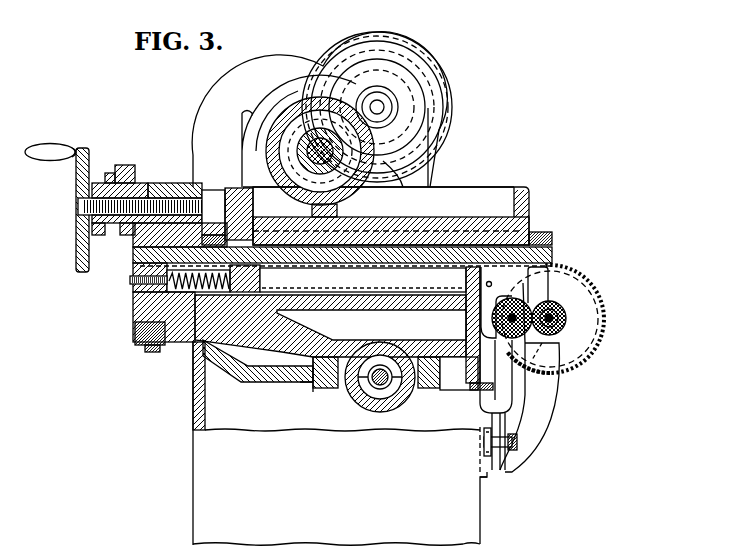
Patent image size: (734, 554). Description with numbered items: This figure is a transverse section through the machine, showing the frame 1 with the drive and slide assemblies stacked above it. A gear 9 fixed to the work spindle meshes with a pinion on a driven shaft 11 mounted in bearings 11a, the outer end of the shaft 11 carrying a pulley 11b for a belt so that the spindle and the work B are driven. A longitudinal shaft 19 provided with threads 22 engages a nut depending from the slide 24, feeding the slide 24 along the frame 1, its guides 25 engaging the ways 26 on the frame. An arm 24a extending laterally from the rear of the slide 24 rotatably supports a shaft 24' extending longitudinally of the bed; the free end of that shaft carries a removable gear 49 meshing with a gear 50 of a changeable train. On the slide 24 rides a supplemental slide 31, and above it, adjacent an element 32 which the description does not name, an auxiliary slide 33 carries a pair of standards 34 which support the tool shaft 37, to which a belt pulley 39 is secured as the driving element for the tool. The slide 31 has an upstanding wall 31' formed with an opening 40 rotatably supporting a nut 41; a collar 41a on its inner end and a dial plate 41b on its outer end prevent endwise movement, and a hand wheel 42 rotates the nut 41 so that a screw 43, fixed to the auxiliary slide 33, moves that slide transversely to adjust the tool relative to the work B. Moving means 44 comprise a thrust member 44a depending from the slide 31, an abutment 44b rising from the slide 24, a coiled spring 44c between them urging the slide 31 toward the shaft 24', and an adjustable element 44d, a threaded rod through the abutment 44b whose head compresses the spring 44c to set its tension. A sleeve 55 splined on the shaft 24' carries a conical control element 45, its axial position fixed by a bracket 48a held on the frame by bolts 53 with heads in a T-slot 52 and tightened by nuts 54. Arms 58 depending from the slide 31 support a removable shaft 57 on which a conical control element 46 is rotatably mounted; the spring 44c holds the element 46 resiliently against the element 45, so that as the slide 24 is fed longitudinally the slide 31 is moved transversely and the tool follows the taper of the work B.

The frame 1 is at (253, 383).
The gear 9 is at (288, 115).
The driven shaft 11 is at (384, 107).
The bearings 11a is at (393, 91).
The pulley 11b is at (440, 66).
The shaft 19 is at (384, 371).
The threads 22 is at (375, 386).
The slide 24 is at (330, 326).
The shaft 24' is at (567, 321).
The arm 24a is at (557, 344).
The guides 25 is at (343, 392).
The ways 26 is at (317, 394).
The supplemental slide 31 is at (360, 254).
The upstanding wall 31' is at (165, 244).
The stop 32 is at (545, 233).
The auxiliary slide 33 is at (527, 209).
The standards 34 is at (338, 208).
The shaft 37 is at (335, 150).
The driving element 39 is at (401, 166).
The opening 40 is at (142, 183).
The nut 41 is at (160, 191).
The collar 41a is at (200, 189).
The dial plate 41b is at (108, 172).
The hand wheel 42 is at (78, 272).
The screw 43 is at (211, 199).
The moving means 44 is at (135, 264).
The thrust member 44a is at (261, 282).
The abutment 44b is at (158, 299).
The coiled spring 44c is at (180, 348).
The adjustable element 44d is at (130, 281).
The control element 45 is at (547, 305).
The control element 46 is at (490, 350).
The bracket 48a is at (547, 389).
The gear 49 is at (598, 297).
The gear 50 is at (466, 320).
The T-slot 52 is at (483, 478).
The bolts 53 is at (480, 447).
The nuts 54 is at (512, 438).
The sleeve 55 is at (562, 313).
The shaft 57 is at (514, 316).
The arms 58 is at (488, 284).
The work B is at (266, 156).